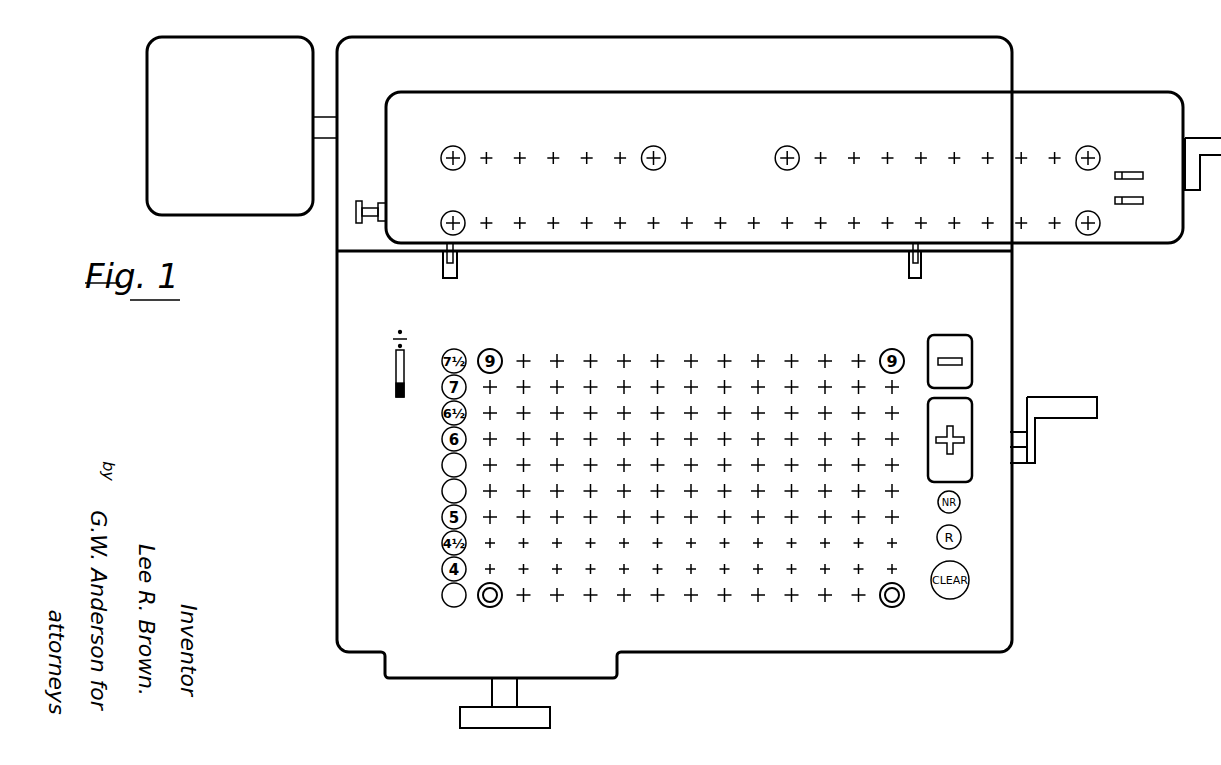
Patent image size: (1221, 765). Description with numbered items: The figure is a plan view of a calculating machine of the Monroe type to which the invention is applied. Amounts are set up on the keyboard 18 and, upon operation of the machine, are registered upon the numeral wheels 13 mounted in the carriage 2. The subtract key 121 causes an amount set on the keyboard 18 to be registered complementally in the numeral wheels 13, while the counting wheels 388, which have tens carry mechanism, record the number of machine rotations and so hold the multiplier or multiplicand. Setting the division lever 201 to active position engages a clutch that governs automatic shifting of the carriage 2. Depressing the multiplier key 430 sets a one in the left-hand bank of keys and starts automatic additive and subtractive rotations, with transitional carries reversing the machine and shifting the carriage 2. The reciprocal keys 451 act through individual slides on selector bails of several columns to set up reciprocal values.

The carriage 2 is at (1043, 105).
The counting wheels 388 is at (1098, 150).
The numeral wheels 13 is at (1088, 236).
The subtract key 121 is at (960, 350).
The division lever 201 is at (396, 392).
The reciprocal keys 451 is at (443, 492).
The multiplier key 430 is at (443, 602).
The keyboard 18 is at (885, 606).